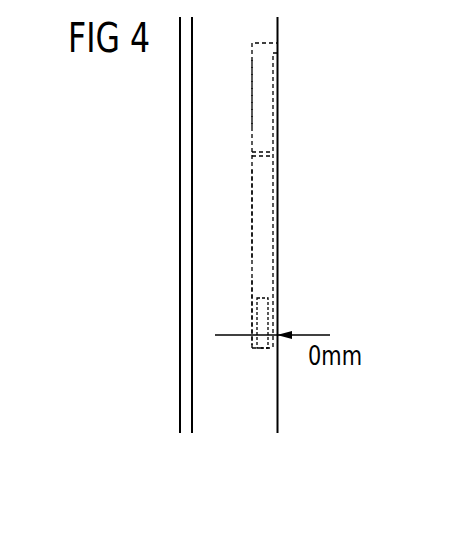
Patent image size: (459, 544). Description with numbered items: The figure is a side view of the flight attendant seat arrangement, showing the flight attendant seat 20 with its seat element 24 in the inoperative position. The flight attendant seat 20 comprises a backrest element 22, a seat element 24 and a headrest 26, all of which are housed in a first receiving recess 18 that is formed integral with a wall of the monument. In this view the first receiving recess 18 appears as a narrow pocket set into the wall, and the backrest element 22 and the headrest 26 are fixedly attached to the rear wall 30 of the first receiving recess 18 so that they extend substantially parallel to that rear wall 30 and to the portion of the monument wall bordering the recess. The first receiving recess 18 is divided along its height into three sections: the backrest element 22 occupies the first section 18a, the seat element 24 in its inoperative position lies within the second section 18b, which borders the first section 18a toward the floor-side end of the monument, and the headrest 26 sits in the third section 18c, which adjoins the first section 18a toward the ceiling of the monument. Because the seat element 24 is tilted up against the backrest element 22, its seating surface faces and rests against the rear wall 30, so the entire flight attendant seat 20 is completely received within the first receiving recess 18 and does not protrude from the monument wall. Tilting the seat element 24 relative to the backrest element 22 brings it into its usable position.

The first receiving recess 18 is at (277, 43).
The first section of the receiving recess 18a is at (247, 203).
The second section of the receiving recess 18b is at (243, 310).
The third section of the receiving recess 18c is at (250, 94).
The flight attendant seat 20 is at (342, 129).
The backrest element 22 is at (272, 222).
The seat element 24 is at (272, 313).
The headrest 26 is at (275, 88).
The rear wall of the first receiving recess 30 is at (252, 135).